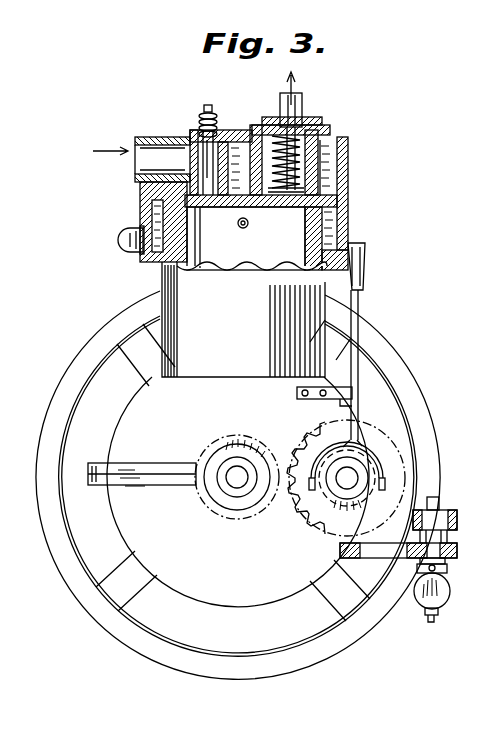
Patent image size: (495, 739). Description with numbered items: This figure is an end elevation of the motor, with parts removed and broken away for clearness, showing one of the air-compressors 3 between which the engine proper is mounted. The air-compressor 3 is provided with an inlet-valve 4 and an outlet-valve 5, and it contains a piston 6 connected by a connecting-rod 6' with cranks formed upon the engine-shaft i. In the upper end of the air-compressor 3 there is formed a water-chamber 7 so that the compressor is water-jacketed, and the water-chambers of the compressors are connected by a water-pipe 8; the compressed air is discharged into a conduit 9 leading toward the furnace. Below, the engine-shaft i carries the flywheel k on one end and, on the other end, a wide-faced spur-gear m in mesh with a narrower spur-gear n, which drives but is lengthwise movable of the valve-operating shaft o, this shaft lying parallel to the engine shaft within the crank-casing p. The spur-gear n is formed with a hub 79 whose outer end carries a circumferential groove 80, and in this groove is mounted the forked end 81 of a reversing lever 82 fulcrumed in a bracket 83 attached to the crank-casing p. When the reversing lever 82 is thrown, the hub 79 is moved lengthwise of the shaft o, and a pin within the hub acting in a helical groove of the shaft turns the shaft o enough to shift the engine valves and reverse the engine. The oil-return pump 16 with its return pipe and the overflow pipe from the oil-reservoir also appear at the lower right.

The air-compressor 3 is at (348, 202).
The inlet-valve 4 is at (190, 163).
The outlet-valve 5 is at (330, 160).
The piston 6 is at (315, 195).
The connecting-rod 6' is at (261, 240).
The water-chamber 7 is at (330, 183).
The water-pipe 8 is at (118, 240).
The conduit 9 is at (302, 100).
The oil-return pump 16 is at (449, 575).
The hub 79 is at (370, 458).
The circumferential groove 80 is at (367, 467).
The forked end 81 is at (367, 448).
The reversing lever 82 is at (350, 335).
The bracket 83 is at (297, 393).
The engine-shaft i is at (237, 480).
The flywheel k is at (357, 632).
The spur-gear m is at (287, 438).
The spur-gear n is at (315, 525).
The valve-operating shaft o is at (358, 477).
The crank-casing p is at (238, 492).